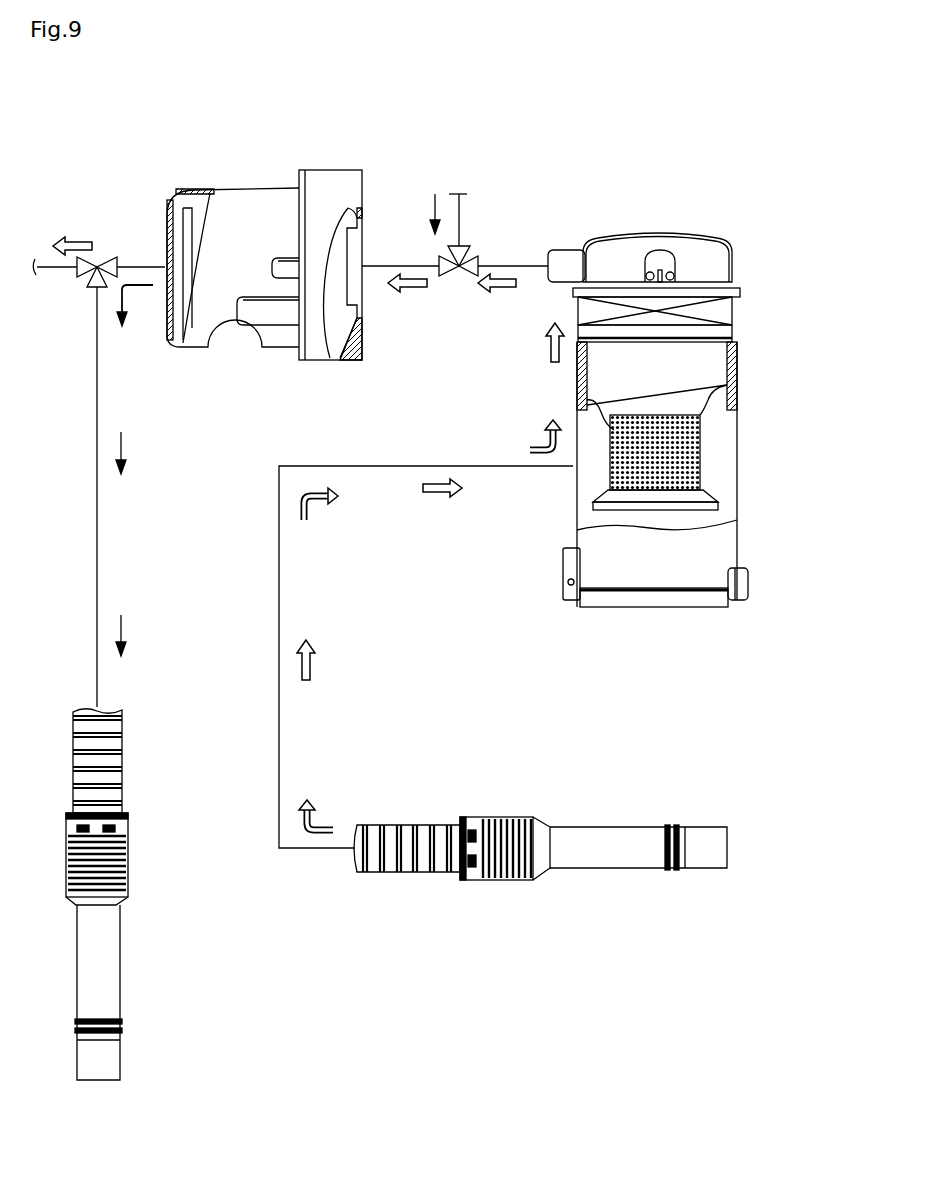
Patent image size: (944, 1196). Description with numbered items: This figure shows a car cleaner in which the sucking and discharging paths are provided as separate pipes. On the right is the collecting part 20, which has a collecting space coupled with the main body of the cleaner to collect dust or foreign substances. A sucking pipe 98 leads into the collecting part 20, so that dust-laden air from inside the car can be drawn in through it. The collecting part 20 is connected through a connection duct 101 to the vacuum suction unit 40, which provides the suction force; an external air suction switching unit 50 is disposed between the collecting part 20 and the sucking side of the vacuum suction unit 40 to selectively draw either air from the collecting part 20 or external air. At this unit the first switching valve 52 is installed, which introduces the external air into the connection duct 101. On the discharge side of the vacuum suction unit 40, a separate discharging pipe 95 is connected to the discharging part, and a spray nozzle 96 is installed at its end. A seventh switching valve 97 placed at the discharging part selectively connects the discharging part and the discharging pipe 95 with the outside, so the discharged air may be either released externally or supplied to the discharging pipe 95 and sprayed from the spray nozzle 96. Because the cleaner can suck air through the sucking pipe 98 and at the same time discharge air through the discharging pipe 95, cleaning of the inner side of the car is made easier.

The collecting part 20 is at (752, 432).
The vacuum suction unit 40 is at (290, 148).
The external air suction switching unit 50 is at (453, 250).
The first switching valve 52 is at (465, 275).
The connection duct 101 is at (525, 265).
The discharging pipe 95 is at (97, 513).
The spray nozzle 96 is at (108, 945).
The seventh switching valve 97 is at (85, 282).
The sucking pipe 98 is at (279, 705).